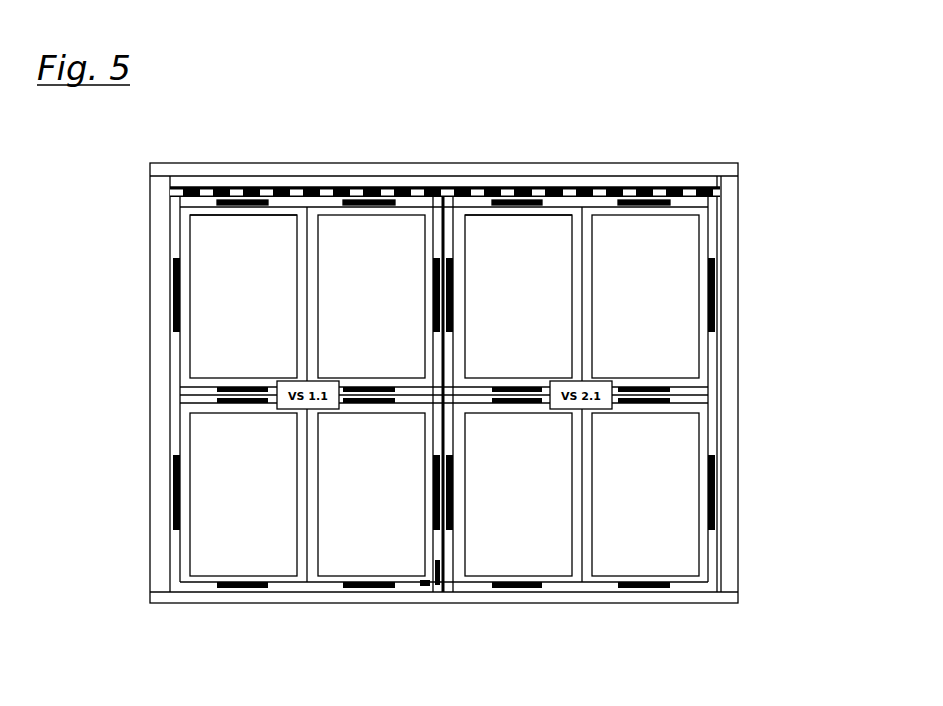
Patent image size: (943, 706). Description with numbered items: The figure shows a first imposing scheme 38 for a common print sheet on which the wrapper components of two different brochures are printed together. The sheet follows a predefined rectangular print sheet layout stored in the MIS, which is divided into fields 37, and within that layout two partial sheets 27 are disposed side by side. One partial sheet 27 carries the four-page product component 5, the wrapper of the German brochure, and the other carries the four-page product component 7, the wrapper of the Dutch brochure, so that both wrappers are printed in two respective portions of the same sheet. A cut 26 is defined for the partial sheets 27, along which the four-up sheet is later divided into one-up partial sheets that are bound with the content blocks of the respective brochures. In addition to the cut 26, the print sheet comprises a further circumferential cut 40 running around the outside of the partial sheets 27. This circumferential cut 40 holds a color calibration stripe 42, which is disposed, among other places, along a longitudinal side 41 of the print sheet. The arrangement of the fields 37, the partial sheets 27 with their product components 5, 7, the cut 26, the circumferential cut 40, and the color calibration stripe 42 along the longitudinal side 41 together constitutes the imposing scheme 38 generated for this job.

The product component 5 is at (200, 349).
The product component 7 is at (687, 352).
The cut 26 is at (558, 200).
The partial sheets 27 is at (199, 228).
The fields 37 is at (367, 0).
The imposing scheme 38 is at (682, 121).
The circumferential cut 40 is at (723, 245).
The longitudinal side 41 is at (274, 170).
The color calibration stripe 42 is at (334, 190).